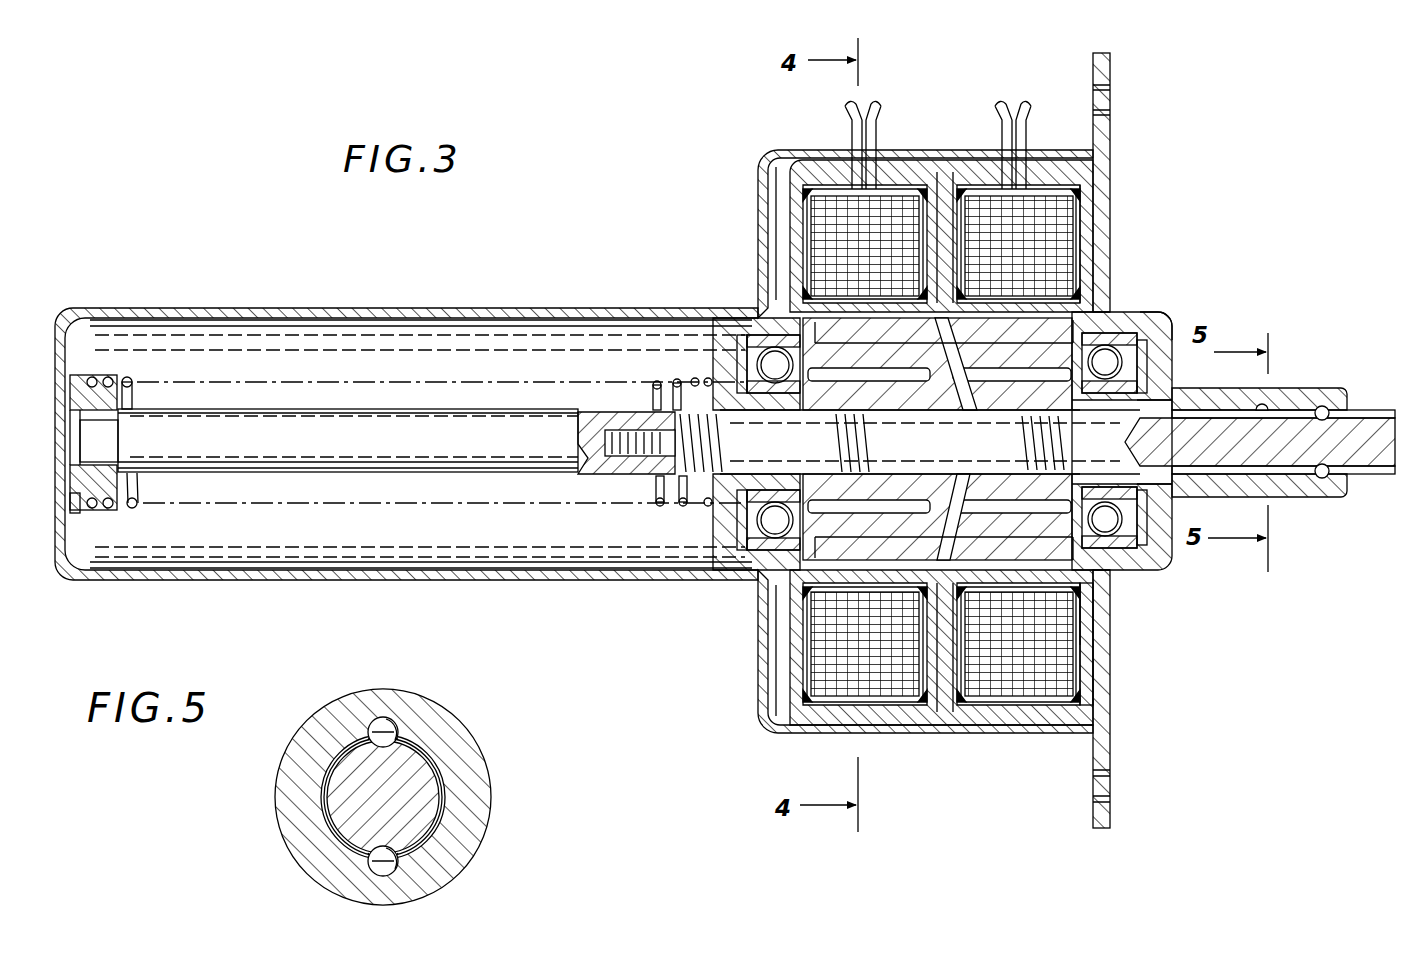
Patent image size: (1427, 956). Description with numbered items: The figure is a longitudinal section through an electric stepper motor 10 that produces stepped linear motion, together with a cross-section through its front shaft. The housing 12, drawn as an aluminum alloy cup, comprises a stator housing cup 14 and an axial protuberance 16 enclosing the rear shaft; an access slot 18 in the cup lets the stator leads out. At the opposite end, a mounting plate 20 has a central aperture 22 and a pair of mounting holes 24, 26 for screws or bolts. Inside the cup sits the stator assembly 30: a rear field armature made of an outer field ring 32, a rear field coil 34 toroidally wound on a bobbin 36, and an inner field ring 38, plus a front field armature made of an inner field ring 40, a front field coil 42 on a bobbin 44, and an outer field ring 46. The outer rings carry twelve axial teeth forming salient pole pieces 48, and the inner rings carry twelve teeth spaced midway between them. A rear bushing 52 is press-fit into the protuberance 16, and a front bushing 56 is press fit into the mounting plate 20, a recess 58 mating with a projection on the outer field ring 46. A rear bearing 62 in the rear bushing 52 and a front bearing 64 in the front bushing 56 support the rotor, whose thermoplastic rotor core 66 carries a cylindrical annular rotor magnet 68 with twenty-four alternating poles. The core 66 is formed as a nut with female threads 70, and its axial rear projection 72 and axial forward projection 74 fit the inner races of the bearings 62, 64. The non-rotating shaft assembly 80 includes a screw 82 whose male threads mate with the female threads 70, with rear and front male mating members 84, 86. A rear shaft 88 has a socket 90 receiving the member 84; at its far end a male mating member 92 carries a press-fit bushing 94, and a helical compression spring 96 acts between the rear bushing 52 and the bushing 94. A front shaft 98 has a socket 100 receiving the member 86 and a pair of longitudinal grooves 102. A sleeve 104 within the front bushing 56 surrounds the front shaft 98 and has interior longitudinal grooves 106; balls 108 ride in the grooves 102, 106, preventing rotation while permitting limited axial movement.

In FIG. 3, the electric stepper motor 10 is at (667, 241).
In FIG. 3, the housing 12 is at (744, 308).
In FIG. 3, the stator housing cup 14 is at (757, 205).
In FIG. 3, the axial protuberance 16 is at (452, 307).
In FIG. 3, the access slot 18 is at (846, 150).
In FIG. 3, the mounting plate 20 is at (1103, 730).
In FIG. 3, the central aperture 22 is at (1107, 580).
In FIG. 3, the mounting hole 24 is at (1111, 100).
In FIG. 3, the mounting hole 26 is at (1112, 783).
In FIG. 3, the stator assembly 30 is at (974, 752).
In FIG. 3, the outer field ring 32 is at (806, 733).
In FIG. 3, the rear field coil 34 is at (868, 678).
In FIG. 3, the bobbin 36 is at (920, 668).
In FIG. 3, the inner field ring 38 is at (937, 668).
In FIG. 3, the inner field ring 40 is at (1013, 710).
In FIG. 3, the front field coil 42 is at (1057, 680).
In FIG. 3, the bobbin 44 is at (1090, 683).
In FIG. 3, the outer field ring 46 is at (1090, 657).
In FIG. 3, the salient pole pieces 48 is at (850, 302).
In FIG. 3, the rear bushing 52 is at (722, 558).
In FIG. 3, the front bushing 56 is at (1177, 563).
In FIG. 3, the recess 58 is at (1112, 583).
In FIG. 3, the rear bearing 62 is at (752, 550).
In FIG. 3, the front bearing 64 is at (1147, 572).
In FIG. 3, the rotor core 66 is at (877, 527).
In FIG. 3, the rotor magnet 68 is at (943, 543).
In FIG. 3, the female threads 70 is at (840, 467).
In FIG. 3, the axial rear projection 72 is at (700, 400).
In FIG. 3, the axial forward projection 74 is at (1170, 333).
In FIG. 3, the shaft assembly 80 is at (600, 478).
In FIG. 3, the screw 82 is at (1010, 450).
In FIG. 3, the rear male mating member 84 is at (630, 433).
In FIG. 3, the front male mating member 86 is at (1140, 407).
In FIG. 3, the rear shaft 88 is at (330, 427).
In FIG. 3, the socket 90 is at (597, 413).
In FIG. 3, the male mating member 92 is at (107, 433).
In FIG. 3, the bushing 94 is at (78, 513).
In FIG. 3, the helical compression spring 96 is at (135, 507).
In FIG. 3, the front shaft 98 is at (1267, 452).
In FIG. 5, the front shaft 98 is at (350, 782).
In FIG. 3, the socket 100 is at (1173, 497).
In FIG. 3, the longitudinal grooves 102 is at (1385, 403).
In FIG. 5, the longitudinal grooves 102 is at (397, 735).
In FIG. 3, the sleeve 104 is at (1317, 395).
In FIG. 5, the sleeve 104 is at (480, 813).
In FIG. 3, the longitudinal grooves 106 is at (1262, 405).
In FIG. 5, the longitudinal grooves 106 is at (373, 723).
In FIG. 3, the balls 108 is at (1323, 407).
In FIG. 5, the balls 108 is at (393, 722).